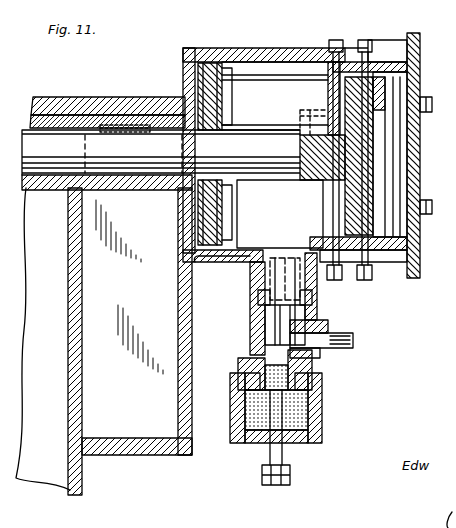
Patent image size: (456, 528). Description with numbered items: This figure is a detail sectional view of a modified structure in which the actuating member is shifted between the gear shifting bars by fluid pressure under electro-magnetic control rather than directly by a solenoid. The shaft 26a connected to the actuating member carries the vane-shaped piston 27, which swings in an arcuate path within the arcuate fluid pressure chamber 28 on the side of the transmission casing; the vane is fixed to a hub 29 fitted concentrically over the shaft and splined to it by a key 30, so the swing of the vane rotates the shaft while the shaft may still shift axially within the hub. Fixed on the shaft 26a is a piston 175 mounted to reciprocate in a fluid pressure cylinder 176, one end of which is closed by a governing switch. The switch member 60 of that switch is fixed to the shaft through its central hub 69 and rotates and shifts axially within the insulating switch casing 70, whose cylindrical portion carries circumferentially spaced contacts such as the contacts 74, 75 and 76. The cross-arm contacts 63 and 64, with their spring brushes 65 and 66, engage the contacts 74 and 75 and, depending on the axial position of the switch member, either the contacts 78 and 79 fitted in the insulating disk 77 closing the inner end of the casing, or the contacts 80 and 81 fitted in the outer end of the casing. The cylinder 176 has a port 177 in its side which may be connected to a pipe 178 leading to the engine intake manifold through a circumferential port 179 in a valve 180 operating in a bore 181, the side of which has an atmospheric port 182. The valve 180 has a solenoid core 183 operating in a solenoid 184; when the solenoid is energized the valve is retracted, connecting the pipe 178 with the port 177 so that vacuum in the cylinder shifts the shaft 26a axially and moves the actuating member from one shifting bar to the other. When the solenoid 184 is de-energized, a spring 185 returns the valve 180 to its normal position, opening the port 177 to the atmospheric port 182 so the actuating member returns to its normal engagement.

The shaft 26a is at (58, 118).
The key 30 is at (127, 125).
The hub 29 is at (126, 192).
The piston 27 is at (130, 341).
The arcuate fluid pressure chamber 28 is at (100, 455).
The fluid pressure cylinder 176 is at (276, 52).
The piston 175 is at (212, 63).
The disk 77 is at (328, 99).
The contact 78 is at (330, 114).
The hub or stem 69 is at (318, 166).
The contact 79 is at (325, 206).
The switch member 60 is at (360, 140).
The spring brush 66 is at (378, 102).
The spring brush 65 is at (386, 188).
The contact 75 is at (412, 78).
The switch casing 70 is at (385, 58).
The contact 76 is at (410, 152).
The contact 81 is at (392, 83).
The contact 80 is at (422, 230).
The contact 74 is at (404, 248).
The contact 63 is at (376, 263).
The contact 64 is at (341, 60).
The port 177 is at (306, 303).
The pipe 178 is at (350, 336).
The circumferential port 179 is at (320, 352).
The bore 181 is at (270, 272).
The atmospheric port 182 is at (258, 297).
The valve 180 is at (268, 306).
The spring 185 is at (240, 363).
The solenoid 184 is at (306, 410).
The solenoid core 183 is at (252, 440).